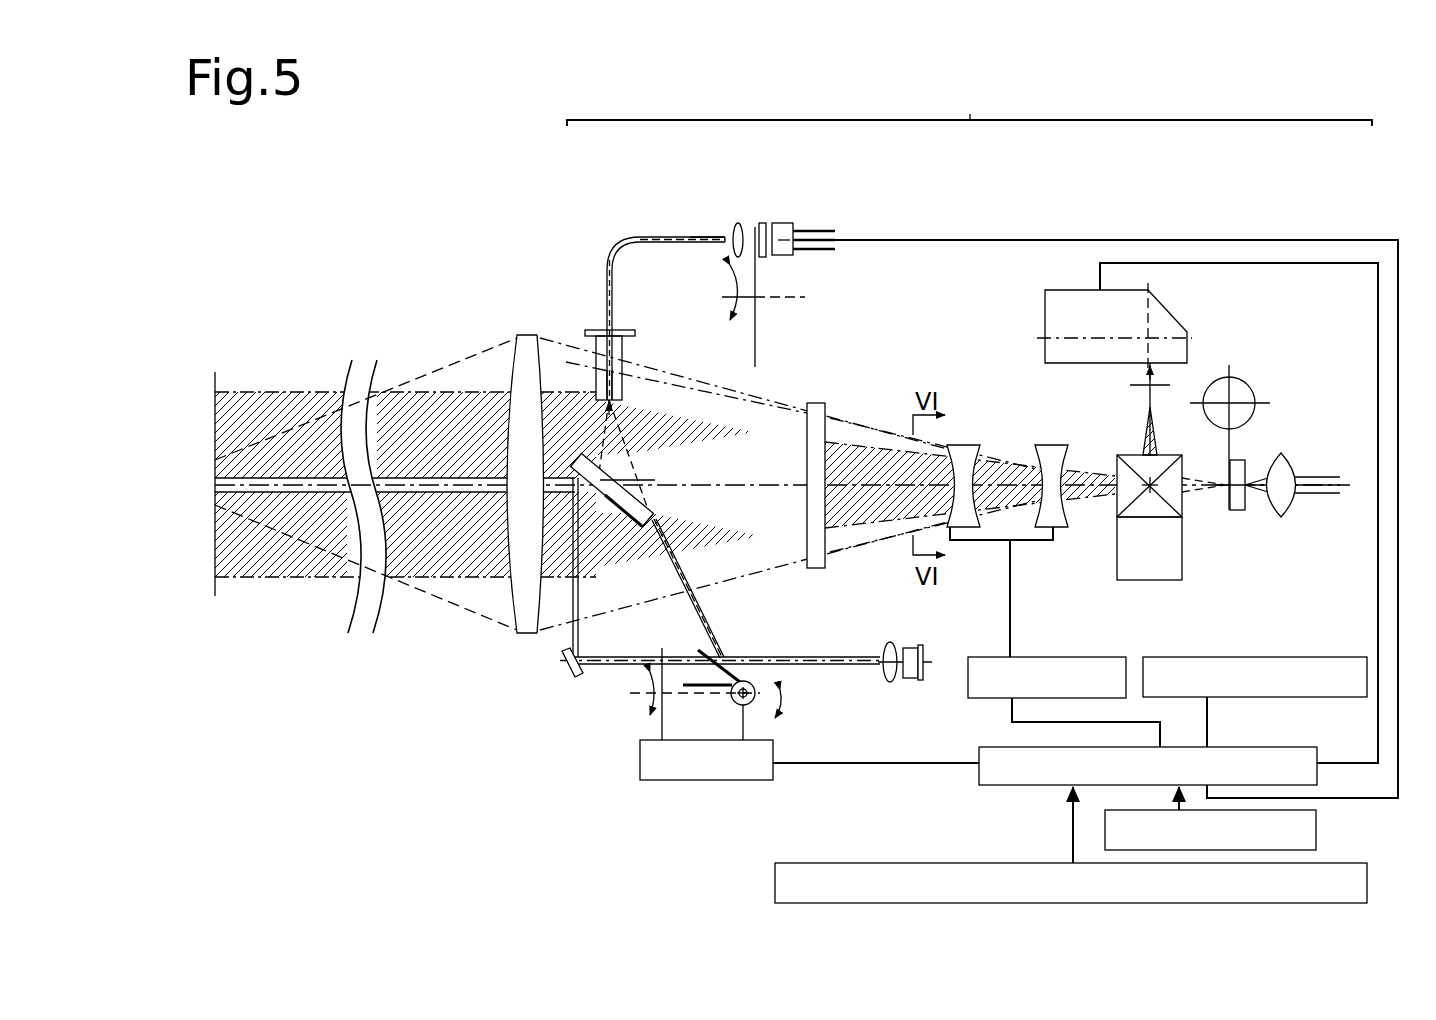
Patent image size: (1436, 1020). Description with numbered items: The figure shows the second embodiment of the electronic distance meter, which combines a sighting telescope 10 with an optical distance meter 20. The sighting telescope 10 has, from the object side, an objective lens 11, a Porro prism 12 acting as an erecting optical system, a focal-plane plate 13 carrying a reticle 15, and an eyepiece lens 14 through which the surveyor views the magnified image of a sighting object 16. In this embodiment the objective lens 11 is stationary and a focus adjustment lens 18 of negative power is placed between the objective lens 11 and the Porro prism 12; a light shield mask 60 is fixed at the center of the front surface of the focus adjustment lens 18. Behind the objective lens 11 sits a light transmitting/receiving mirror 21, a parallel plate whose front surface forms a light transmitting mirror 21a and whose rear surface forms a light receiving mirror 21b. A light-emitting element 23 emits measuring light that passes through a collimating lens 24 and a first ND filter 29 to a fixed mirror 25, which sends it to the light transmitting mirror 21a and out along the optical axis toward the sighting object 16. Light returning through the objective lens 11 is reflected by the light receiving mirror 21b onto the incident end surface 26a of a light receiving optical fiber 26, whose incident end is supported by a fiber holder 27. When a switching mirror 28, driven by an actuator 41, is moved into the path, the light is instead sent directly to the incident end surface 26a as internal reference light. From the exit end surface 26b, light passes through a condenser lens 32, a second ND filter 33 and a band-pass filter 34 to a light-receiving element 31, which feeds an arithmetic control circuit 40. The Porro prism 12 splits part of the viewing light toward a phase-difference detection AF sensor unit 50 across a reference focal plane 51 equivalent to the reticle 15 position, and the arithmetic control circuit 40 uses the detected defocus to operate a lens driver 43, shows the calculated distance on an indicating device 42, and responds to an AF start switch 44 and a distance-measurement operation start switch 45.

The sighting telescope 10 is at (969, 105).
The objective lens 11 is at (537, 337).
The Porro prism 12 is at (1117, 455).
The focal-plane plate 13 is at (1250, 380).
The eyepiece lens 14 is at (1283, 455).
The reticle 15 is at (1222, 412).
The sighting object 16 is at (225, 425).
The focus adjustment lens 18 is at (963, 445).
The optical distance meter 20 is at (659, 288).
The light transmitting/receiving mirror 21 is at (620, 530).
The light transmitting mirror 21a is at (580, 560).
The light receiving mirror 21b is at (635, 492).
The light-emitting element 23 is at (912, 679).
The collimating lens 24 is at (892, 642).
The fixed mirror 25 is at (560, 662).
The light receiving optical fiber 26 is at (632, 238).
The incident end surface 26a is at (650, 410).
The exit end surface 26b is at (725, 235).
The fiber holder 27 is at (622, 345).
The switching mirror 28 is at (738, 622).
The first ND filter 29 is at (663, 722).
The light-receiving element 31 is at (782, 256).
The condenser lens 32 is at (738, 222).
The second ND filter 33 is at (757, 345).
The band-pass filter 34 is at (763, 222).
The arithmetic control circuit 40 is at (1265, 747).
The actuator 41 is at (725, 780).
The indicating device 42 is at (1285, 657).
The lens driver 43 is at (1063, 657).
The AF start switch 44 is at (1316, 828).
The distance-measurement operation start switch 45 is at (1015, 863).
The phase-difference detection AF sensor unit 50 is at (1080, 286).
The reference focal plane 51 is at (1143, 388).
The light shield mask 60 is at (945, 480).